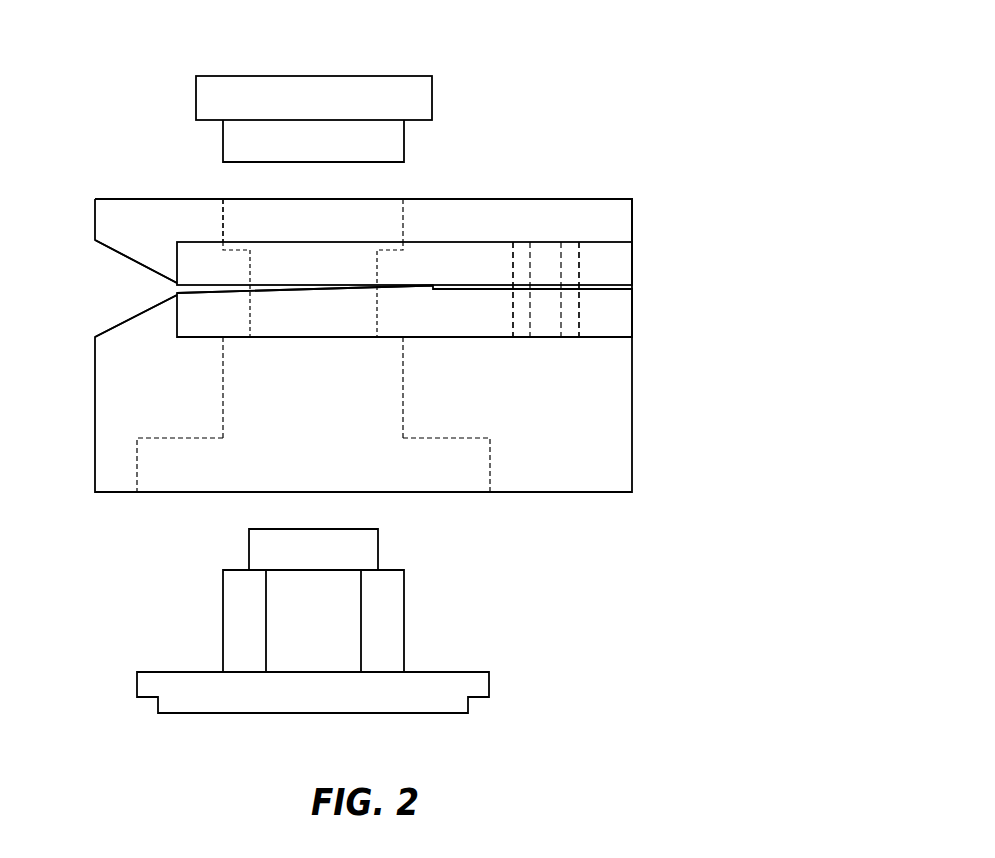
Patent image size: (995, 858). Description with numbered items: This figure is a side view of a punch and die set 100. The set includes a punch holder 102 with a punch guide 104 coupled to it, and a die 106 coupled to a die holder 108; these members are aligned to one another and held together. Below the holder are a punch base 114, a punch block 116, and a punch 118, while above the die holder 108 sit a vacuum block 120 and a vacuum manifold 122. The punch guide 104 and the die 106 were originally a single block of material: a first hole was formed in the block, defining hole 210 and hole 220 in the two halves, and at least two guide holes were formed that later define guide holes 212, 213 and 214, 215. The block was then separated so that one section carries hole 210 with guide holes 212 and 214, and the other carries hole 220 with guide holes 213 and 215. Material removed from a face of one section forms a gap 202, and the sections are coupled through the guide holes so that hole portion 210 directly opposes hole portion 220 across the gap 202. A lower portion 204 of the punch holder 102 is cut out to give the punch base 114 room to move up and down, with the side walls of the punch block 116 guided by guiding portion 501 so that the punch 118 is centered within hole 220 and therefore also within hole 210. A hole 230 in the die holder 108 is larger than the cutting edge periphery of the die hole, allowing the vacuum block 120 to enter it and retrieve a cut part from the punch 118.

The punch and die set 100 is at (597, 80).
The punch holder 102 is at (632, 420).
The punch guide 104 is at (633, 313).
The die 106 is at (633, 266).
The die holder 108 is at (633, 222).
The punch base 114 is at (489, 685).
The punch block 116 is at (404, 620).
The punch 118 is at (378, 548).
The vacuum block 120 is at (404, 137).
The vacuum manifold 122 is at (432, 97).
The gap 202 is at (128, 291).
The lower portion 204 is at (137, 465).
The hole 210 is at (362, 268).
The guide hole 212 is at (520, 250).
The guide hole 213 is at (519, 333).
The guide hole 214 is at (568, 250).
The guide hole 215 is at (568, 333).
The hole 220 is at (362, 317).
The hole 230 is at (242, 208).
The guiding portion 501 is at (243, 462).